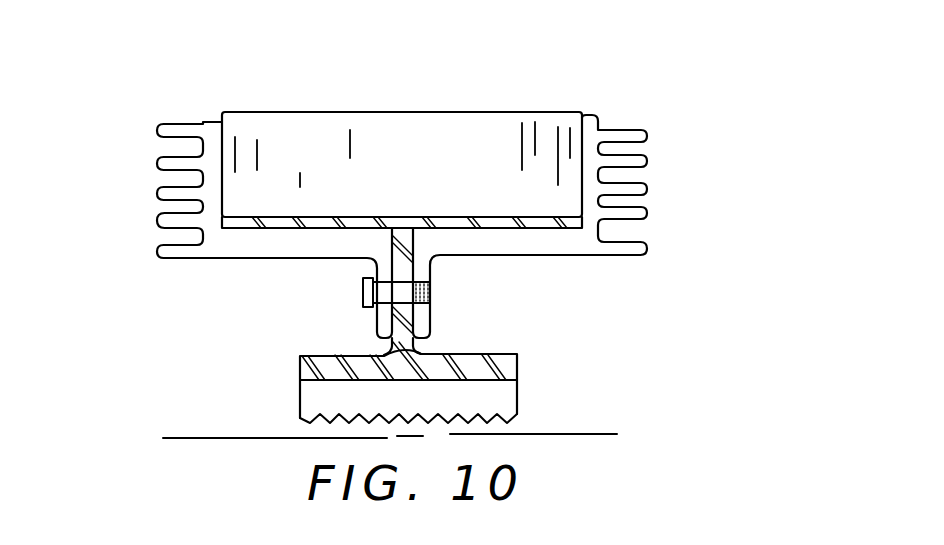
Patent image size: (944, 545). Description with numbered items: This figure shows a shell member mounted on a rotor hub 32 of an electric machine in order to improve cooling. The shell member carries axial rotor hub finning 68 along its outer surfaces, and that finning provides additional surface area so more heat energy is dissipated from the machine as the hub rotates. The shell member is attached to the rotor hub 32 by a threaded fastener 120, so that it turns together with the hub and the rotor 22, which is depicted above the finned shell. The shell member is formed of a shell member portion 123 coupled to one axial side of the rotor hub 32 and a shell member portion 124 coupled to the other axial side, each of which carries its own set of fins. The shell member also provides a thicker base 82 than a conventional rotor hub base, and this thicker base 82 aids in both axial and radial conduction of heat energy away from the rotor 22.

The rotor 22 is at (403, 130).
The rotor hub 32 is at (510, 365).
The axial rotor hub finning 68 is at (410, 158).
The base 82 is at (197, 252).
The threaded fastener 120 is at (367, 302).
The shell member portion 123 is at (183, 128).
The shell member portion 124 is at (602, 137).